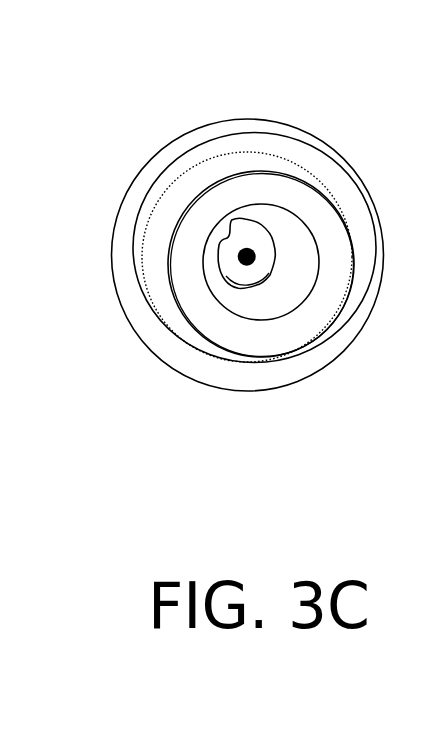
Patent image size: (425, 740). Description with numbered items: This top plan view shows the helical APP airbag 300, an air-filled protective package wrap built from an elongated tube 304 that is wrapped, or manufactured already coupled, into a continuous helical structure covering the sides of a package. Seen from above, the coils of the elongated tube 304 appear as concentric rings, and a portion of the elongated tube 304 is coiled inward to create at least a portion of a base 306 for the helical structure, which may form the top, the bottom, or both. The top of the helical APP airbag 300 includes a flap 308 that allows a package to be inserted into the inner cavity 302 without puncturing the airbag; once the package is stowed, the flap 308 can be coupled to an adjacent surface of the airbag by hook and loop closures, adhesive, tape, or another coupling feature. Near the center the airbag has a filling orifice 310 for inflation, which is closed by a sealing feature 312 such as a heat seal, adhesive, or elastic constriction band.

The helical APP airbag 300 is at (341, 89).
The inner cavity 302 is at (197, 163).
The elongated tube 304 is at (213, 123).
The base 306 is at (290, 336).
The flap 308 is at (306, 172).
The filling orifice 310 is at (233, 272).
The sealing feature 312 is at (238, 255).